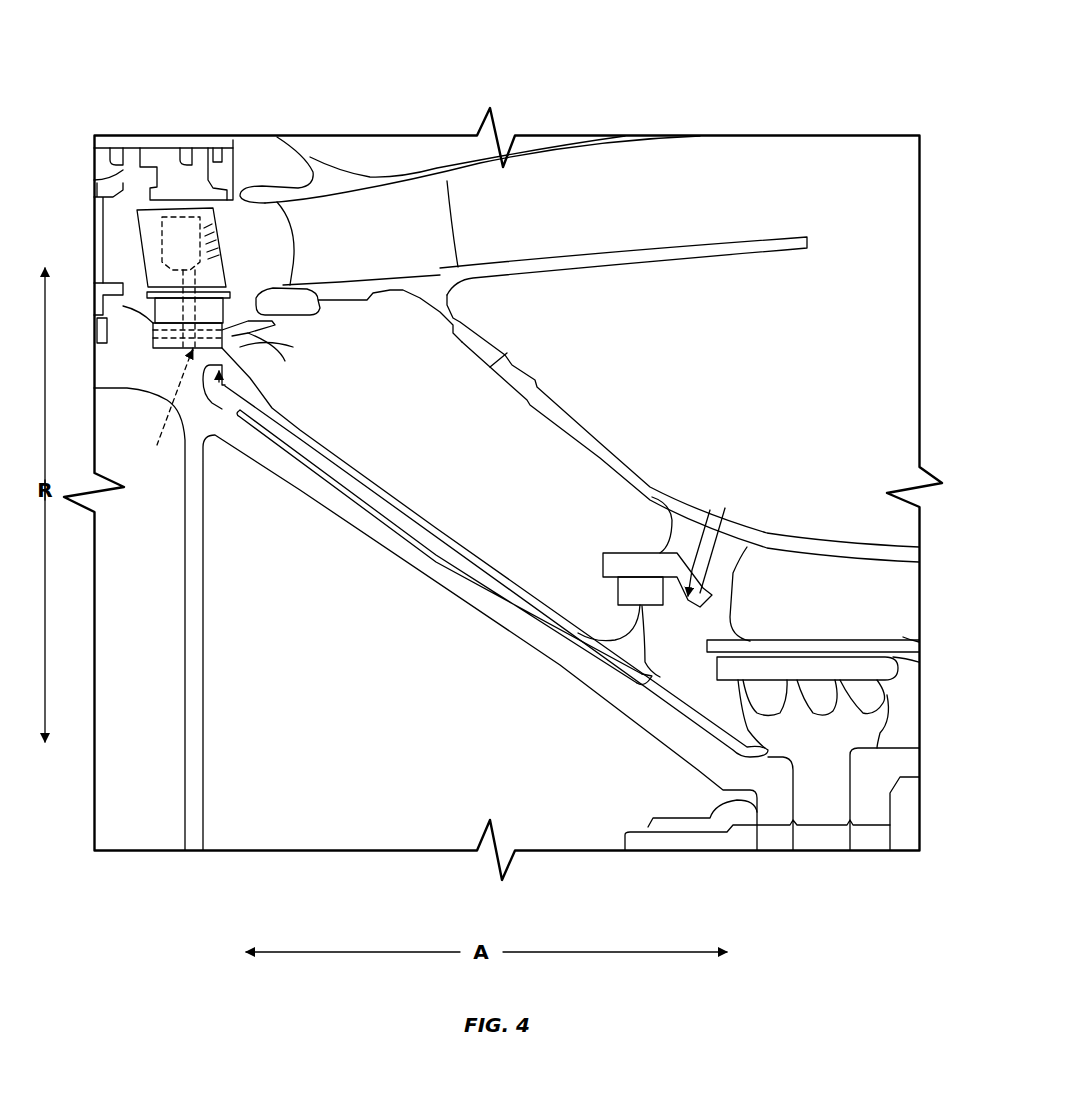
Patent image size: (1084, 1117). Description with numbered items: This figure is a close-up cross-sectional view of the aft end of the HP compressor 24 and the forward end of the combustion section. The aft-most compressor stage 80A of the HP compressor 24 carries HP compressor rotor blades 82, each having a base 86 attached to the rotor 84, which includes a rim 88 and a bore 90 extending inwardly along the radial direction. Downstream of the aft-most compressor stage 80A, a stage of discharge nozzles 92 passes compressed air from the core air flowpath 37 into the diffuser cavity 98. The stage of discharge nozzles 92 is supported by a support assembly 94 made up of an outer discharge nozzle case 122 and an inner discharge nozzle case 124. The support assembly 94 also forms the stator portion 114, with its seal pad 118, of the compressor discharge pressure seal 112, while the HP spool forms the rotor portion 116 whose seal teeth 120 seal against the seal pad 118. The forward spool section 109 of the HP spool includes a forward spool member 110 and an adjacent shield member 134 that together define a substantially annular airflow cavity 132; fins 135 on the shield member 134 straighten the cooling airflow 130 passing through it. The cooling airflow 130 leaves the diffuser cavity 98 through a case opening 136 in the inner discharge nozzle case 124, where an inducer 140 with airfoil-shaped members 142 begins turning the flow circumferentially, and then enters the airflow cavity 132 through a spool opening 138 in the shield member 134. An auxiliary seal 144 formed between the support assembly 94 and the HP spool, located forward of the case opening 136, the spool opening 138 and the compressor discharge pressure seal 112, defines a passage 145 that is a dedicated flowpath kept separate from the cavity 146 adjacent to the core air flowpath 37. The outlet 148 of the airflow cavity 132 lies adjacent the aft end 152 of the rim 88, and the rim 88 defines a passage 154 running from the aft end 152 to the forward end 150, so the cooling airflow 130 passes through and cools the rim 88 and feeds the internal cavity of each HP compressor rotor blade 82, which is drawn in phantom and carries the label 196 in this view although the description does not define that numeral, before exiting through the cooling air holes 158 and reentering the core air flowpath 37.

The HP compressor 24 is at (110, 92).
The core air flowpath 37 is at (262, 222).
The aft-most compressor stage 80A is at (138, 208).
The HP compressor rotor blades 82 is at (164, 183).
The rotor 84 is at (148, 546).
The base 86 is at (168, 308).
The rim 88 is at (172, 338).
The bore 90 is at (193, 606).
The stage of discharge nozzles 92 is at (390, 215).
The support assembly 94 is at (690, 375).
The diffuser cavity 98 is at (870, 308).
The forward spool section 109 is at (424, 639).
The forward spool member 110 is at (393, 556).
The compressor discharge pressure seal 112 is at (926, 636).
The stator portion 114 is at (857, 632).
The rotor portion 116 is at (921, 768).
The seal pad 118 is at (800, 662).
The seal teeth 120 is at (880, 675).
The outer discharge nozzle case 122 is at (312, 157).
The inner discharge nozzle case 124 is at (565, 425).
The cooling airflow 130 is at (222, 400).
The airflow cavity 132 is at (418, 532).
The shield member 134 is at (337, 458).
The fins 135 is at (570, 647).
The case opening 136 is at (737, 505).
The spool opening 138 is at (652, 677).
The inducer 140 is at (732, 555).
The airfoil-shaped members 142 is at (693, 558).
The auxiliary seal 144 is at (595, 600).
The passage 145 is at (735, 606).
The cavity 146 is at (415, 421).
The outlet 148 is at (245, 350).
The forward end 150 is at (138, 346).
The aft end 152 is at (248, 338).
The passage 154 is at (161, 414).
The cooling air holes 158 is at (228, 254).
The blade tip 196 is at (168, 256).